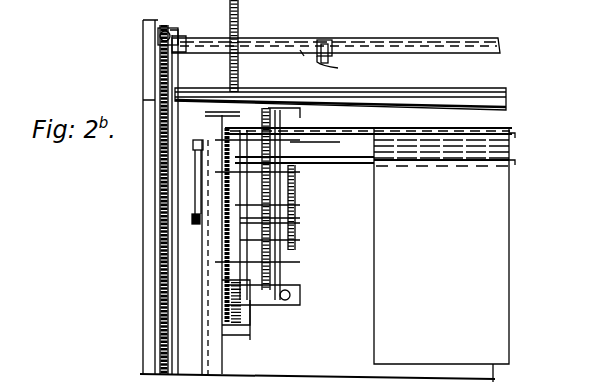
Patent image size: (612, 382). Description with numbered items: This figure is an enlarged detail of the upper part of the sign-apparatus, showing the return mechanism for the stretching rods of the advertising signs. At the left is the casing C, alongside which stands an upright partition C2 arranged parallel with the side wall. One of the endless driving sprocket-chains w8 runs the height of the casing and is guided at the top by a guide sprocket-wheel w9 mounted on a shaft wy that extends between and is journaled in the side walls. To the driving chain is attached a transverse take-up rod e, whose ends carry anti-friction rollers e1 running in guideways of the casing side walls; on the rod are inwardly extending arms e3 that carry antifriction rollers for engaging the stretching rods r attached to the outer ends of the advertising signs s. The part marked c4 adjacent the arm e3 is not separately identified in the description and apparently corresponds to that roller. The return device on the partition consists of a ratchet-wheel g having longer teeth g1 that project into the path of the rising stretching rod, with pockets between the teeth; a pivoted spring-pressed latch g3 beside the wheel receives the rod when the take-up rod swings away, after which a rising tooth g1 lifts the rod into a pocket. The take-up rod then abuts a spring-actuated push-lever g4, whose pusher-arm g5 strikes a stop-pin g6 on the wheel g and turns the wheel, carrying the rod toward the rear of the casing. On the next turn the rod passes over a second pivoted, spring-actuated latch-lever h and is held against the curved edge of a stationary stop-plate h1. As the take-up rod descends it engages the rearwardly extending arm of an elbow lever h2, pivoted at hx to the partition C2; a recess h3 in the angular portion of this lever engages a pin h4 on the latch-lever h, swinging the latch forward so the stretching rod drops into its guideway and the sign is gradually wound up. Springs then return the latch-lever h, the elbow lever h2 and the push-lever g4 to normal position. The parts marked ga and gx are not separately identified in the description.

The casing C is at (145, 348).
The upright partition C2 is at (215, 372).
The guide sprocket-wheel w9 is at (162, 70).
The driving sprocket-chain w8 is at (174, 286).
The shaft wy is at (432, 92).
The take-up rod e is at (293, 42).
The anti-friction roller e1 is at (173, 32).
The inwardly extending arm e3 is at (293, 60).
The clip c4 is at (336, 60).
The push-lever g4 is at (240, 24).
The stretching rod r is at (322, 134).
The advertising sign s is at (444, 255).
The stop-pin g6 is at (272, 149).
The pivot hx is at (195, 144).
The stop-plate h1 is at (278, 112).
The elbow lever h2 is at (195, 178).
The recess h3 is at (158, 206).
The pin h4 is at (193, 198).
The latch-lever h is at (240, 200).
The cross piece ga is at (232, 117).
The threaded rod gx is at (272, 132).
The pusher-arm g5 is at (292, 172).
The longer tooth g1 is at (275, 216).
The ratchet-wheel g is at (300, 232).
The latch g3 is at (238, 270).